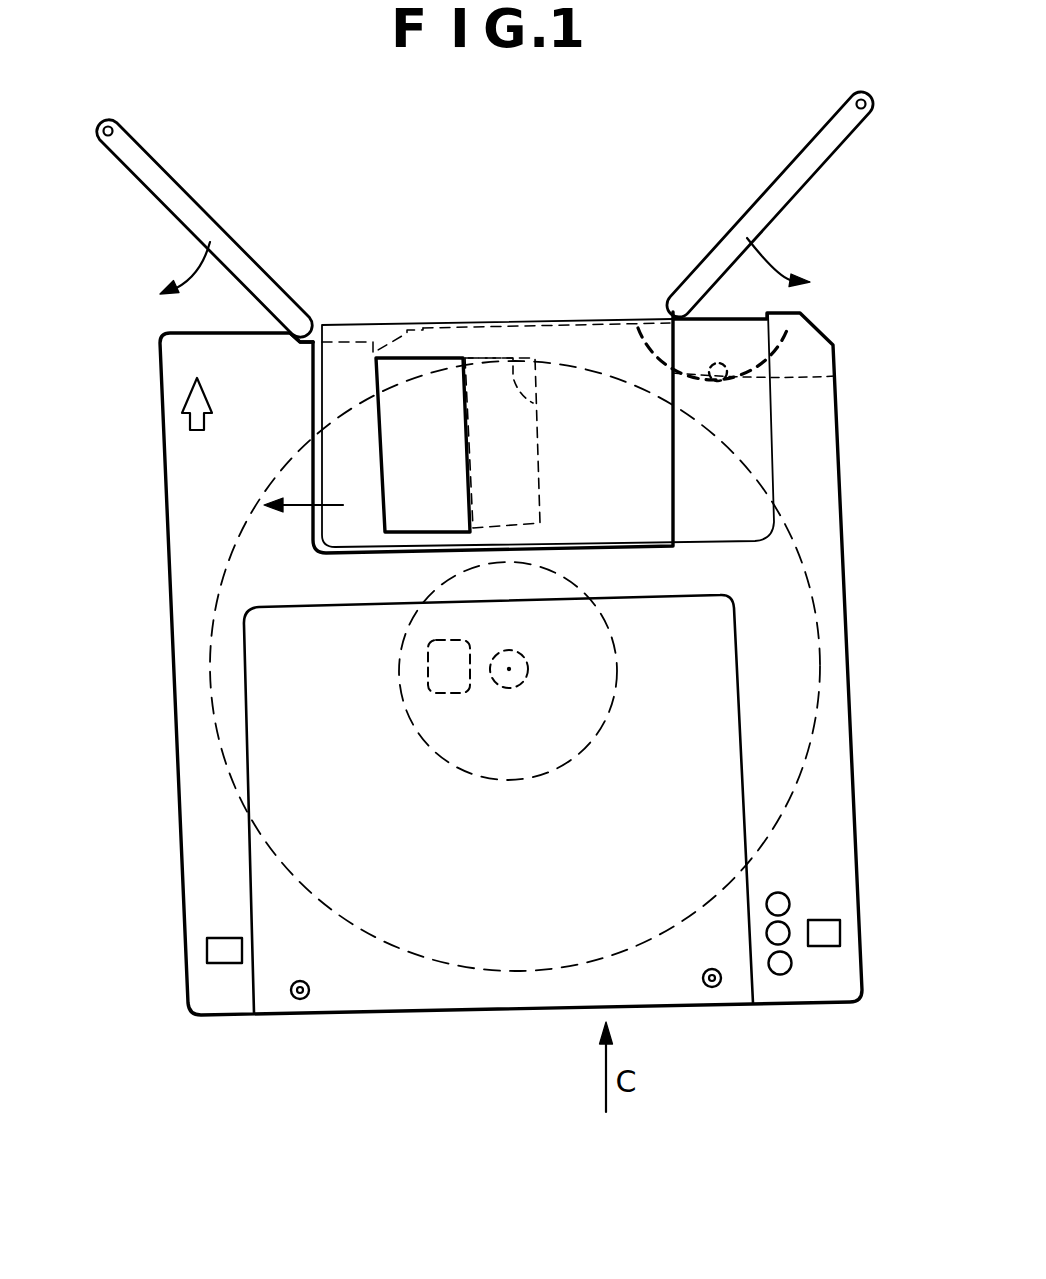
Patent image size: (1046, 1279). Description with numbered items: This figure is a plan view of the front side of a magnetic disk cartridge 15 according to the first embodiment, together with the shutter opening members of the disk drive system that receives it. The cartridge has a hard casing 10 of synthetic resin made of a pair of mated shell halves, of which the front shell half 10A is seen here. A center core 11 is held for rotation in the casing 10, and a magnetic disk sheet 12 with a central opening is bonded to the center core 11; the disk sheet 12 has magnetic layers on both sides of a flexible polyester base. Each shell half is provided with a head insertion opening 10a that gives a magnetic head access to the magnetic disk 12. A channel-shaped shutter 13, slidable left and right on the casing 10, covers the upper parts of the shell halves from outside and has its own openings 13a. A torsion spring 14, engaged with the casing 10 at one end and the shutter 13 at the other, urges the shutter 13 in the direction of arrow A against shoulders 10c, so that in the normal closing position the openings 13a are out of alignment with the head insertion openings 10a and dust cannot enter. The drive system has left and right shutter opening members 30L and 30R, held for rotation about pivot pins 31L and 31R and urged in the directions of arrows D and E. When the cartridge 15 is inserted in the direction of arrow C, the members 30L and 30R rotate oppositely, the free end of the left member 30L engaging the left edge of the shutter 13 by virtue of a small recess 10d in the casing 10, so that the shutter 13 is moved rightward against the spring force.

The hard casing 10 is at (167, 521).
The shell half 10A is at (202, 462).
The head insertion opening 10a is at (513, 347).
The shoulders 10c is at (314, 380).
The small recess 10d is at (307, 320).
The center core 11 is at (548, 772).
The magnetic disk sheet 12 is at (205, 662).
The shutter 13 is at (605, 313).
The openings 13a is at (380, 403).
The torsion spring 14 is at (835, 376).
The magnetic disk cartridge 15 is at (522, 1017).
The left shutter opening member 30L is at (199, 203).
The right shutter opening member 30R is at (776, 188).
The pivot pin 31L is at (96, 138).
The pivot pin 31R is at (873, 112).